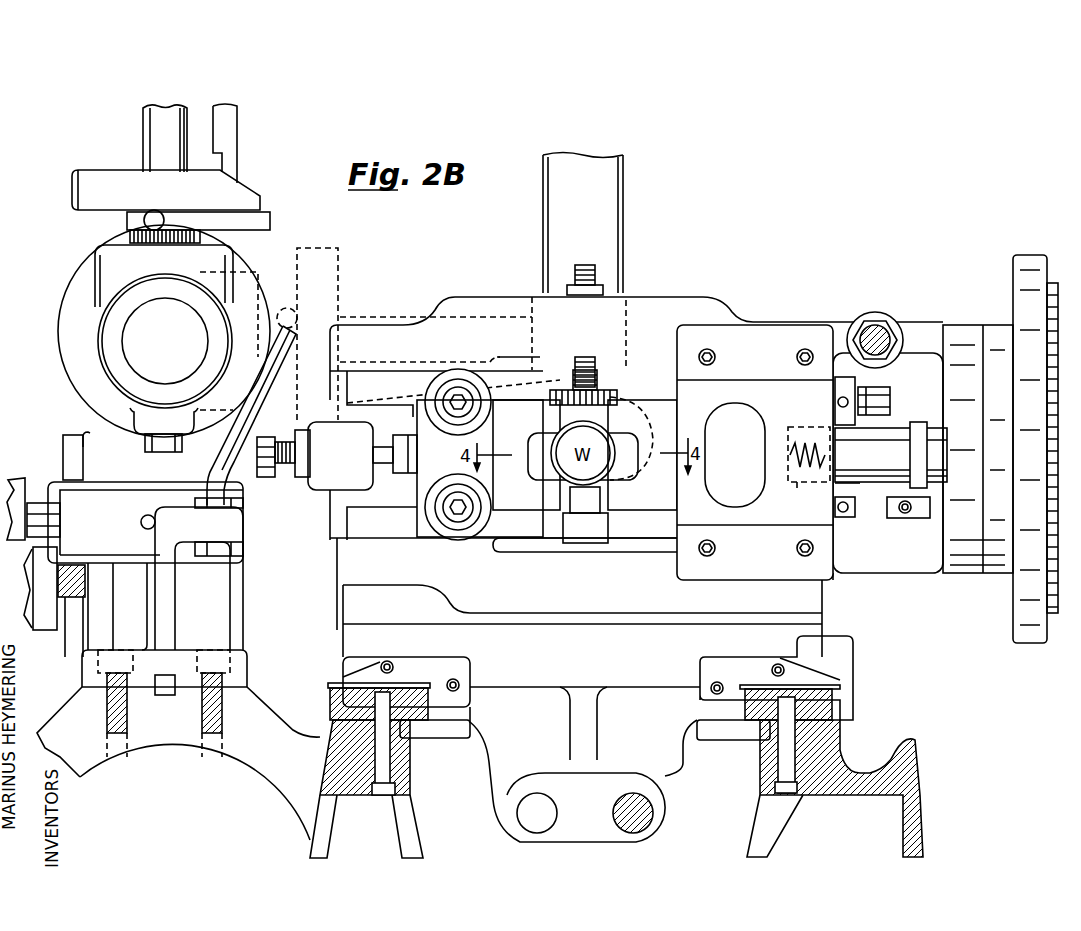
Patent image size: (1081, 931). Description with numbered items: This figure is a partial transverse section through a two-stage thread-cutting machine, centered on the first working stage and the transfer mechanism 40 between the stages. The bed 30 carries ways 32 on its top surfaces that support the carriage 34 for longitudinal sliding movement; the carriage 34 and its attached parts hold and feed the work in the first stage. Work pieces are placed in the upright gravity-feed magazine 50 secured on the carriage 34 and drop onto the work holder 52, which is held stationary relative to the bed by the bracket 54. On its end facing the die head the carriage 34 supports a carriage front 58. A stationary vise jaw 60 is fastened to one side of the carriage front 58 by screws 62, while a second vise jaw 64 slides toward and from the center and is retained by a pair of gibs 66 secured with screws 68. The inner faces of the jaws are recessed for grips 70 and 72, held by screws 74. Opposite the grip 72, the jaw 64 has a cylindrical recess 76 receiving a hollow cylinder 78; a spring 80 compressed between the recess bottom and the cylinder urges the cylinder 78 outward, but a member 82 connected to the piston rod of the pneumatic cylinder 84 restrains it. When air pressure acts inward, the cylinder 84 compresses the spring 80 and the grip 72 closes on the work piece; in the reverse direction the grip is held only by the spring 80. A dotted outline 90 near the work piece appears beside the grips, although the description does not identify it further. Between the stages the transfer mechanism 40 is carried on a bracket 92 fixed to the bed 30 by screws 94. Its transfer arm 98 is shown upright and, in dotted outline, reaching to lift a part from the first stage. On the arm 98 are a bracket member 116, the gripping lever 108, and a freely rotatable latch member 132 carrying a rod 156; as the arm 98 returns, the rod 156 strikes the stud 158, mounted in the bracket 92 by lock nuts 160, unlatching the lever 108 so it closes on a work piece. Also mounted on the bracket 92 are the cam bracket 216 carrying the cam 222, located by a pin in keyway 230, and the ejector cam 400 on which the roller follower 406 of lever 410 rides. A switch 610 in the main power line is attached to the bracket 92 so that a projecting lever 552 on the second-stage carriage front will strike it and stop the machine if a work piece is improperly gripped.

The bed 30 is at (270, 782).
The ways 32 is at (400, 692).
The carriage 34 is at (587, 664).
The transfer mechanism 40 is at (107, 162).
The gravity-feed magazine 50 is at (560, 227).
The work holder 52 is at (573, 533).
The bracket 54 is at (558, 543).
The carriage front 58 is at (503, 300).
The stationary vise jaw 60 is at (382, 377).
The screws 62 is at (453, 497).
The second vise jaw 64 is at (817, 406).
The gibs 66 is at (761, 373).
The screws 68 is at (800, 353).
The grip 70 is at (532, 498).
The grip 72 is at (655, 455).
The screws 74 is at (403, 470).
The cylindrical recess 76 is at (797, 492).
The hollow cylinder 78 is at (842, 483).
The spring 80 is at (788, 453).
The member 82 is at (893, 432).
The pneumatic cylinder 84 is at (1000, 325).
The cam outline 90 is at (640, 442).
The bracket 92 is at (215, 613).
The screws 94 is at (223, 708).
The transfer arm 98 is at (152, 122).
The gripping lever 108 is at (228, 132).
The bracket member 116 is at (82, 187).
The latch member 132 is at (267, 217).
The rod 156 is at (155, 212).
The stud 158 is at (247, 388).
The lock nuts 160 is at (243, 550).
The cam bracket 216 is at (105, 577).
The cam 222 is at (72, 450).
The keyway 230 is at (90, 433).
The ejector cam 400 is at (70, 652).
The roller follower 406 is at (72, 565).
The lever 410 is at (47, 630).
The lever 552 is at (25, 470).
The switch 610 is at (110, 520).